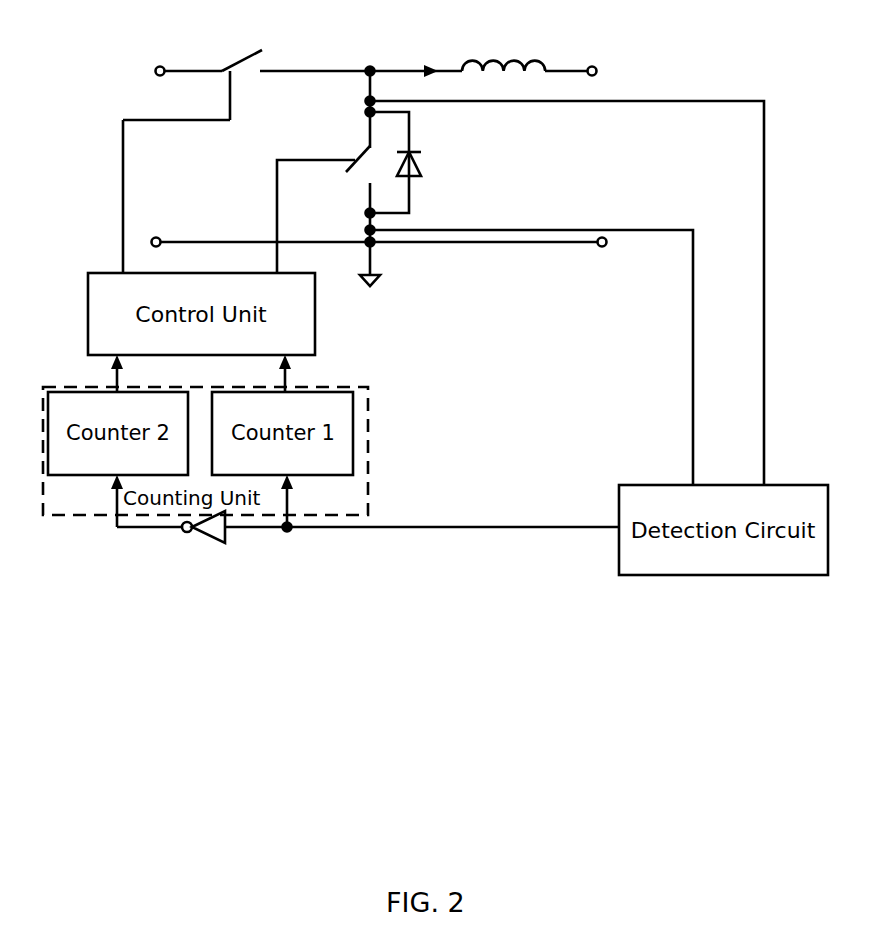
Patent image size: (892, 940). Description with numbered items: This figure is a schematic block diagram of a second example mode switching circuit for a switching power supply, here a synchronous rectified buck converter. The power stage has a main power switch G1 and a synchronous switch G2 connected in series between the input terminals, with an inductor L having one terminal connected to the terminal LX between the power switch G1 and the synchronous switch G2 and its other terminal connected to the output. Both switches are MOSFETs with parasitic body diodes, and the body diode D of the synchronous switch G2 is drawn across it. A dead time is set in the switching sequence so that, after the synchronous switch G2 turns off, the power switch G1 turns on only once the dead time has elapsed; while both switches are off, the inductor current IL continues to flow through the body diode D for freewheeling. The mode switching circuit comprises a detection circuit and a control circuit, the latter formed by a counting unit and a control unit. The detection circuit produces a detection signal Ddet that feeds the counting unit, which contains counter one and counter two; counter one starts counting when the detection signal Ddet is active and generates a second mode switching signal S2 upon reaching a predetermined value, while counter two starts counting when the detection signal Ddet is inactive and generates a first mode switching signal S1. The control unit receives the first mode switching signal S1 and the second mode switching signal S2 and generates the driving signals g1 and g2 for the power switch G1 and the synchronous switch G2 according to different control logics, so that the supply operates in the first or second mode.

The main power switch G1 is at (209, 76).
The synchronous switch G2 is at (350, 206).
The driving signal g1 is at (176, 196).
The driving signal g2 is at (316, 216).
The terminal LX is at (363, 94).
The inductor current IL is at (416, 59).
The inductor L is at (529, 53).
The body diode D is at (404, 162).
The first mode switching signal S1 is at (130, 374).
The second mode switching signal S2 is at (298, 374).
The detection signal Ddet is at (368, 520).